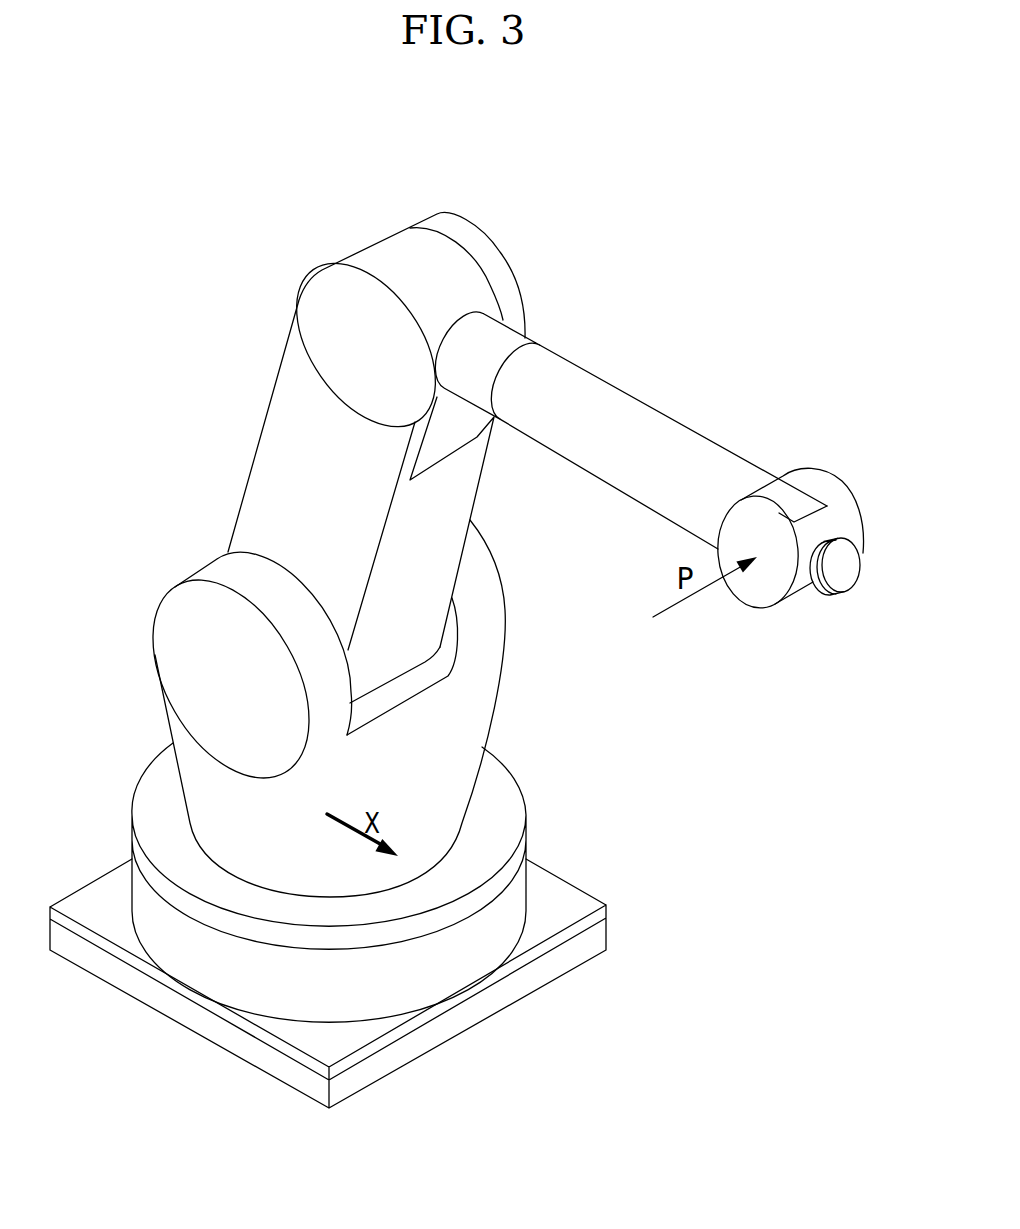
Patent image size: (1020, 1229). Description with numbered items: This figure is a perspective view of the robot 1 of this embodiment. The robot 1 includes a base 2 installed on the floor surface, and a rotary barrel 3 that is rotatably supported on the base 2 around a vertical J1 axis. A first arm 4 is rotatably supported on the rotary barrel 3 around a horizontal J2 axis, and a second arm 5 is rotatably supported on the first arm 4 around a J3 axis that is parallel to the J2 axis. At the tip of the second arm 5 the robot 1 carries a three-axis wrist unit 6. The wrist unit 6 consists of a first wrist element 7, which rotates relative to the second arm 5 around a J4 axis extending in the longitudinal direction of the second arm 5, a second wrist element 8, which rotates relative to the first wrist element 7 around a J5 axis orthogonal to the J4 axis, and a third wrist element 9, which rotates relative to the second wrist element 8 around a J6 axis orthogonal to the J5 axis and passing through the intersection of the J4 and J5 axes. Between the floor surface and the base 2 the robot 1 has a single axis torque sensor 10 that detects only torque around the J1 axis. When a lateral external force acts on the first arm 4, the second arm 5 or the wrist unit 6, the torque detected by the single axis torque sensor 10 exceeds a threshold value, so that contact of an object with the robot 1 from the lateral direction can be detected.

The robot 1 is at (163, 236).
The base 2 is at (470, 950).
The rotary barrel 3 is at (460, 724).
The first arm 4 is at (447, 535).
The second arm 5 is at (497, 340).
The wrist unit 6 is at (806, 530).
The first wrist element 7 is at (640, 422).
The second wrist element 8 is at (807, 582).
The third wrist element 9 is at (843, 573).
The single axis torque sensor 10 is at (418, 1044).